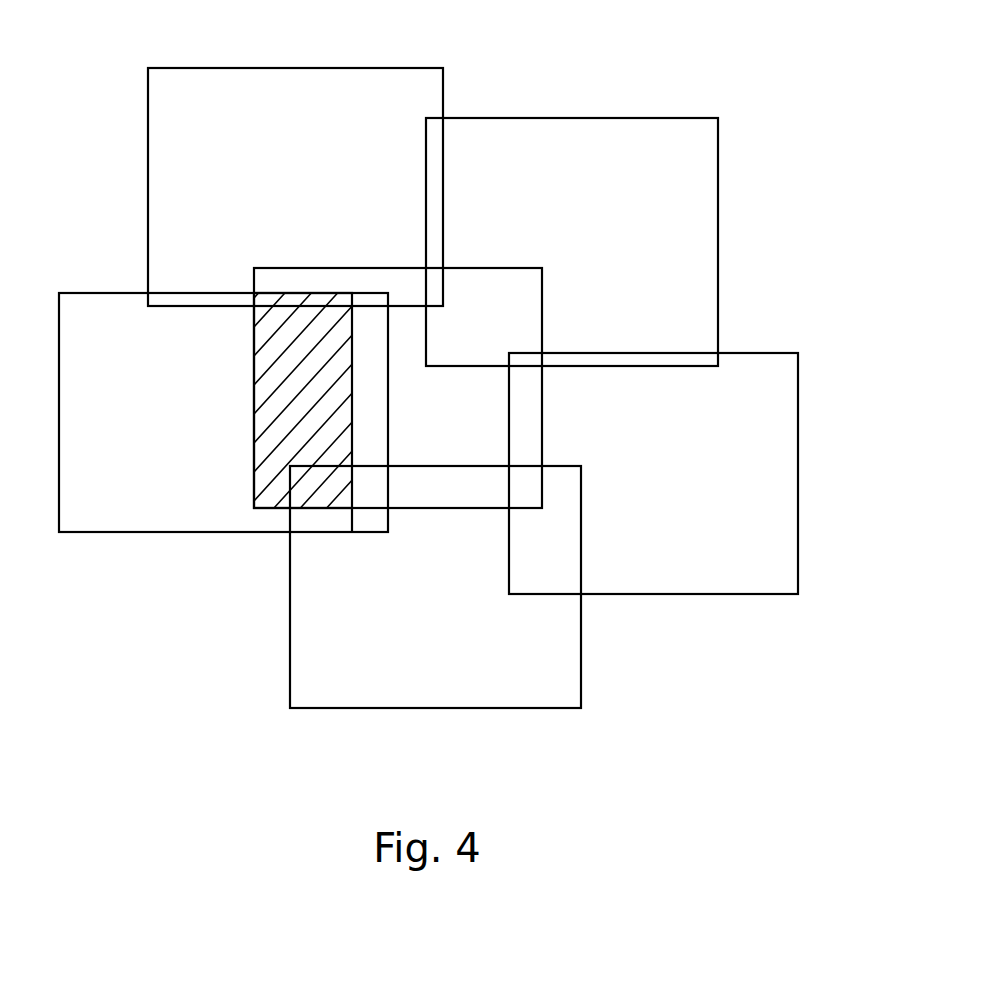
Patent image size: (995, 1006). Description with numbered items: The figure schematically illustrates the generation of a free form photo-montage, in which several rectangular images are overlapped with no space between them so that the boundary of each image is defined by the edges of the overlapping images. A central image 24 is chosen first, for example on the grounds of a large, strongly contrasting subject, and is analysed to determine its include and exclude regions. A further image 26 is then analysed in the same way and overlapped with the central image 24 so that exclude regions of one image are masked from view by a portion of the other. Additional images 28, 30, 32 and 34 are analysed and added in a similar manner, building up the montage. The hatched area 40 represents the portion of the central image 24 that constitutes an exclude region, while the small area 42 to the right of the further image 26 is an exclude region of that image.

The central image 24 is at (450, 440).
The further image 26 is at (95, 308).
The additional image 28 is at (307, 92).
The additional image 30 is at (602, 135).
The additional image 32 is at (775, 438).
The additional image 34 is at (520, 695).
The hatched area 40 is at (278, 408).
The small area 42 is at (372, 374).